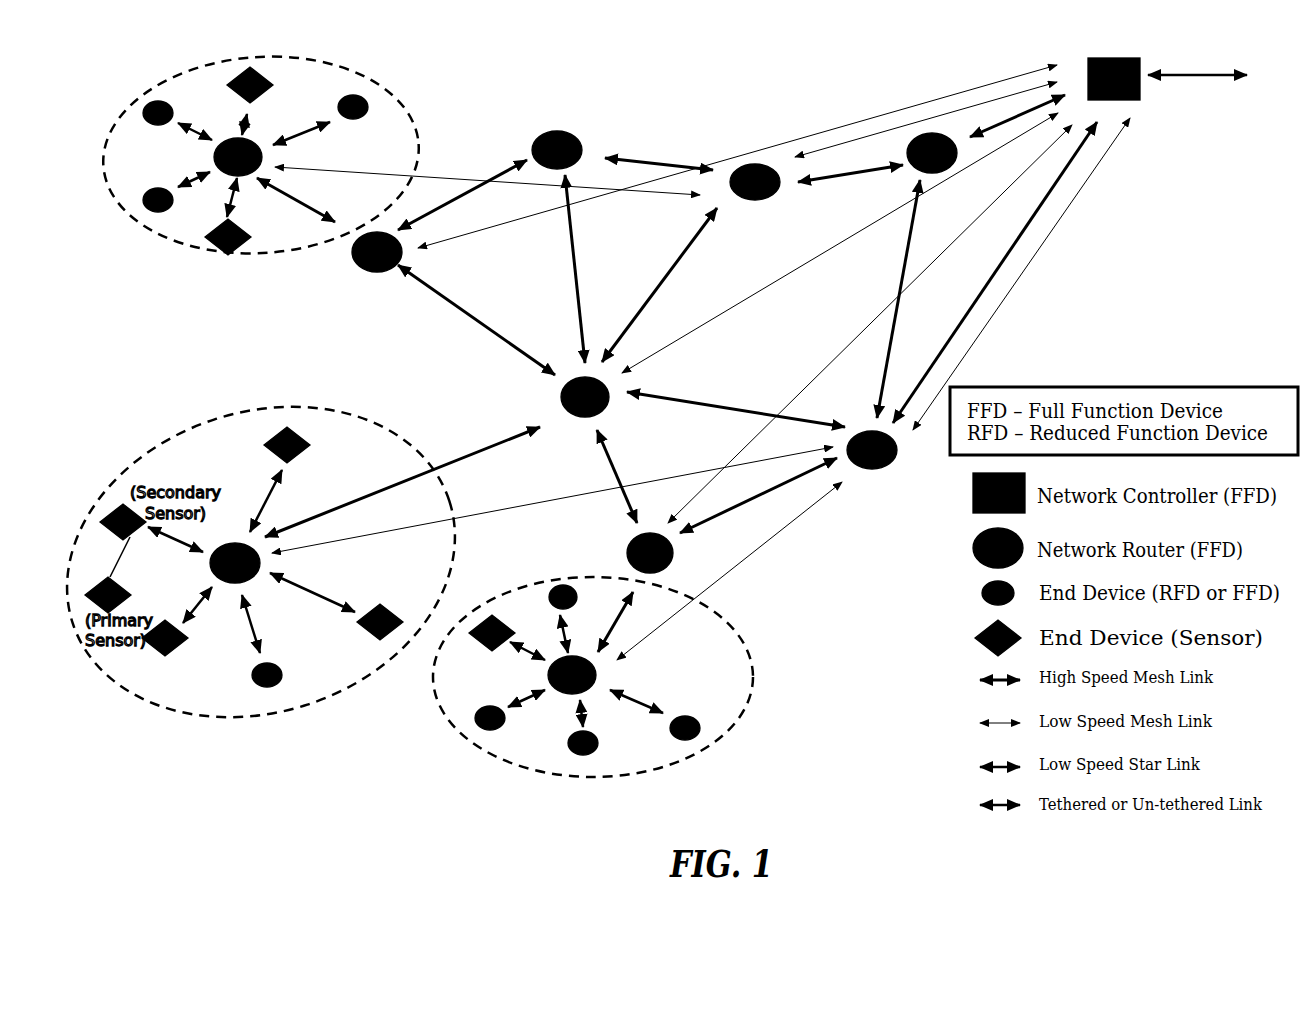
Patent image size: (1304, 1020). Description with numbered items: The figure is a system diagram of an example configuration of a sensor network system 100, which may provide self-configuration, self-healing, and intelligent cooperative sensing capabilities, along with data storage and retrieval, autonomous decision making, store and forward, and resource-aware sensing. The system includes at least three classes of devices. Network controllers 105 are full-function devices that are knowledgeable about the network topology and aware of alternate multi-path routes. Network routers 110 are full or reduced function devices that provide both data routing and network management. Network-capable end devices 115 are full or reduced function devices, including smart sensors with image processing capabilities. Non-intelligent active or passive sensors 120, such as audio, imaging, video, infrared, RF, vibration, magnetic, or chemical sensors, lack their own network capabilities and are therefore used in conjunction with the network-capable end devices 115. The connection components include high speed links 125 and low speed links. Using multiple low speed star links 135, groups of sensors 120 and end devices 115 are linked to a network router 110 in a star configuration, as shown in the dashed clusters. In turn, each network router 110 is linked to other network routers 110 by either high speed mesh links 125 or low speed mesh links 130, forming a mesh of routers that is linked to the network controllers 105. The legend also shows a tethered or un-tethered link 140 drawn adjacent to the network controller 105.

The sensor network system 100 is at (290, 800).
The network controller 105 is at (1037, 274).
The network router 110 is at (601, 402).
The network-capable end device 115 is at (563, 427).
The sensor 120 is at (544, 372).
The high speed mesh link 125 is at (677, 393).
The low speed mesh link 130 is at (701, 399).
The low speed star link 135 is at (584, 443).
The tethered or un-tethered link 140 is at (1095, 446).